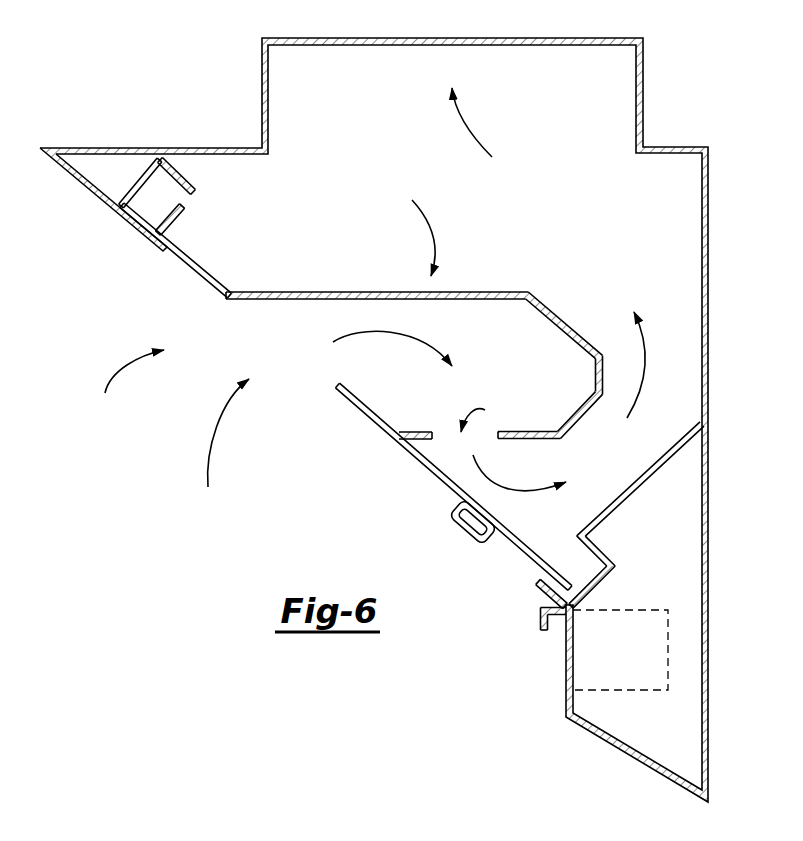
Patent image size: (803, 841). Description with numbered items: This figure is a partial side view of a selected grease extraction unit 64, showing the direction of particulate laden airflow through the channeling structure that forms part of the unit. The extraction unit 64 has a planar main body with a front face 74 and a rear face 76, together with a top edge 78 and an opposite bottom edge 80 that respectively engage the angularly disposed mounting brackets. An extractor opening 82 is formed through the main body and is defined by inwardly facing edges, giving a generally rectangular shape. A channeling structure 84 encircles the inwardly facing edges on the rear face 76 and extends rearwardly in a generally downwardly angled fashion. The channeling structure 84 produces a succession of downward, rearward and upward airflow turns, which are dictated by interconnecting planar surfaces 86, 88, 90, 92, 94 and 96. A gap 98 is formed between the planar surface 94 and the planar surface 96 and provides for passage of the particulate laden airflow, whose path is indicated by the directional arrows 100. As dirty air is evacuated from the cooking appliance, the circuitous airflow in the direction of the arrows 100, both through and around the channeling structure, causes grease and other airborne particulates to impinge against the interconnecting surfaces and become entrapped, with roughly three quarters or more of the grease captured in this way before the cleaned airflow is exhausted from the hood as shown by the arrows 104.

The first extraction unit 64 is at (127, 387).
The front face 74 is at (184, 263).
The rear face 76 is at (207, 271).
The top edge 78 is at (182, 207).
The bottom edge 80 is at (597, 590).
The extractor opening 82 is at (325, 377).
The channeling structure 84 is at (411, 225).
The planar surface 86 is at (295, 291).
The planar surface 88 is at (570, 300).
The planar surface 90 is at (603, 377).
The planar surface 92 is at (587, 410).
The planar surface 94 is at (523, 440).
The planar surface 96 is at (417, 432).
The gap 98 is at (485, 410).
The directional arrows 100 is at (222, 412).
The arrows 104 is at (460, 127).